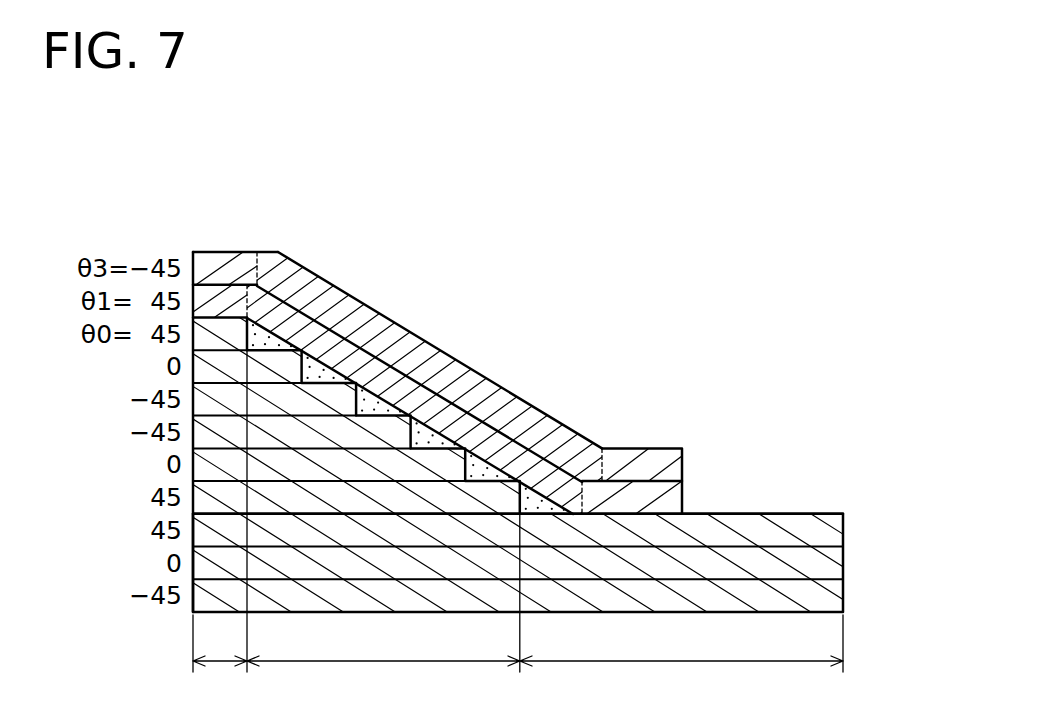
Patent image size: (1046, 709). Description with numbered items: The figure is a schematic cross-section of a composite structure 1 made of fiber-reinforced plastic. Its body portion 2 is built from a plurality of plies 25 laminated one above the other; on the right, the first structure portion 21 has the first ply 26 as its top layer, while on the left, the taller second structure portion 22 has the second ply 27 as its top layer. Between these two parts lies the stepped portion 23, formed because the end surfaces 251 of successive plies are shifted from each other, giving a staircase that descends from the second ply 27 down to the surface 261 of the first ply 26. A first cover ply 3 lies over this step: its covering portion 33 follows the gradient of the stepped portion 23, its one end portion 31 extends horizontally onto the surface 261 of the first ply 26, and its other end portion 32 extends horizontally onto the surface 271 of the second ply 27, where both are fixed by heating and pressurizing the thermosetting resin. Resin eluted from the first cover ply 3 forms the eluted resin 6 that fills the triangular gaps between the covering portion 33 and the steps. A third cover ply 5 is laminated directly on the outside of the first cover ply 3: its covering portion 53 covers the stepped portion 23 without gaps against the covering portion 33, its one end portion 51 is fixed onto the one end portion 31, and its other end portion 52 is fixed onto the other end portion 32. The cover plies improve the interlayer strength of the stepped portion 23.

The composite structure 1 is at (420, 166).
The body portion 2 is at (778, 511).
The first cover ply 3 is at (445, 410).
The third cover ply 5 is at (671, 445).
The eluted resin 6 is at (403, 369).
The first structure portion 21 is at (681, 648).
The second structure portion 22 is at (220, 648).
The stepped portion 23 is at (383, 648).
The plies 25 is at (537, 492).
The first ply 26 is at (844, 527).
The second ply 27 is at (262, 320).
The one end portion 31 is at (673, 505).
The other end portion 32 is at (207, 292).
The covering portion 33 is at (481, 461).
The one end portion 51 is at (623, 458).
The other end portion 52 is at (203, 262).
The covering portion 53 is at (335, 300).
The end surfaces 251 is at (550, 431).
The surface 261 is at (826, 513).
The surface 271 is at (225, 313).